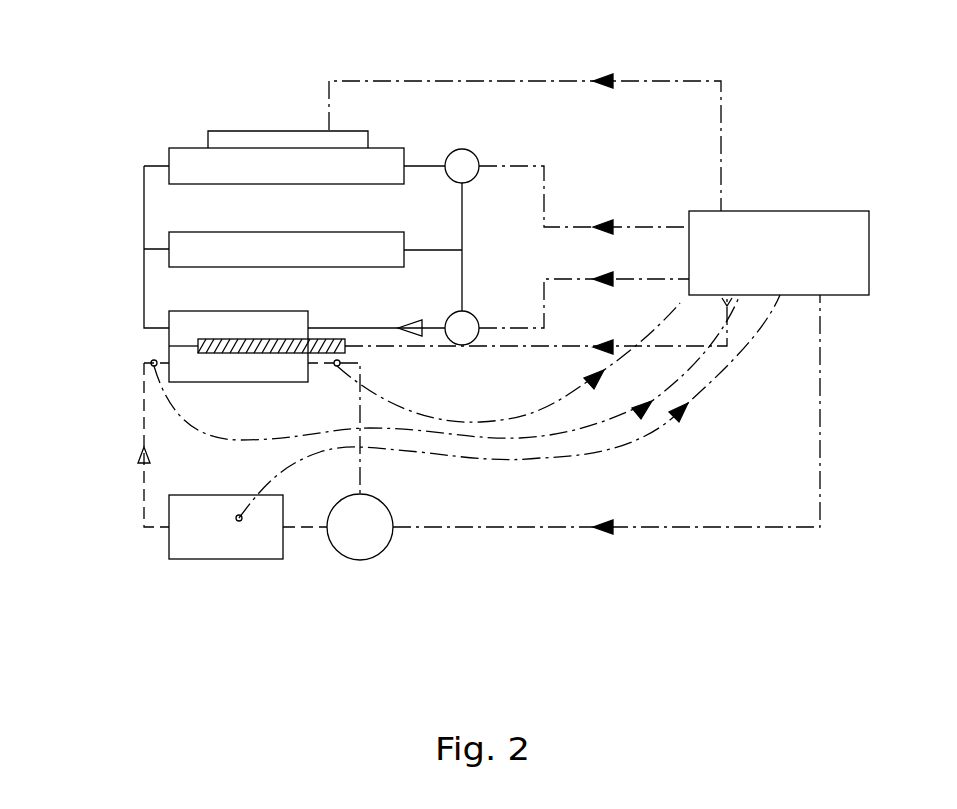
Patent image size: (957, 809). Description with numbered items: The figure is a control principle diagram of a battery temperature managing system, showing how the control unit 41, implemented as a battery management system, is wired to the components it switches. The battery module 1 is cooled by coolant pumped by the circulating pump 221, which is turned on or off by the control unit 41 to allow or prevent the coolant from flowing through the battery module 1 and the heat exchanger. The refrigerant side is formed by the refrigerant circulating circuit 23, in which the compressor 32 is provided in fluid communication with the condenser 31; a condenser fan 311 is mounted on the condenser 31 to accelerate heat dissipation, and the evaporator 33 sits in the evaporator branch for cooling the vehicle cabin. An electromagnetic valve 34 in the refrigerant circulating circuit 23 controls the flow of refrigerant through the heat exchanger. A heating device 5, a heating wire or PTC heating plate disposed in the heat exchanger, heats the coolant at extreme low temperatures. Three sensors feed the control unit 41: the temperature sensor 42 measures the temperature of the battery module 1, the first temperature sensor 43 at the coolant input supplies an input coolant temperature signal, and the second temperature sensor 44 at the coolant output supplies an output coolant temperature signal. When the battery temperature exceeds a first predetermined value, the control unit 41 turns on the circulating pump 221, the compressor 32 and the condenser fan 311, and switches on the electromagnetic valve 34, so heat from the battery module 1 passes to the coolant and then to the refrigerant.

The battery module 1 is at (172, 546).
The heating device 5 is at (356, 355).
The refrigerant circulating circuit 23 is at (143, 208).
The condenser 31 is at (213, 168).
The condenser fan 311 is at (260, 142).
The compressor 32 is at (468, 160).
The evaporator 33 is at (290, 246).
The electromagnetic valve 34 is at (467, 338).
The control unit 41 is at (795, 211).
The temperature sensor 42 is at (239, 518).
The first temperature sensor 43 is at (332, 377).
The second temperature sensor 44 is at (150, 377).
The circulating pump 221 is at (362, 527).